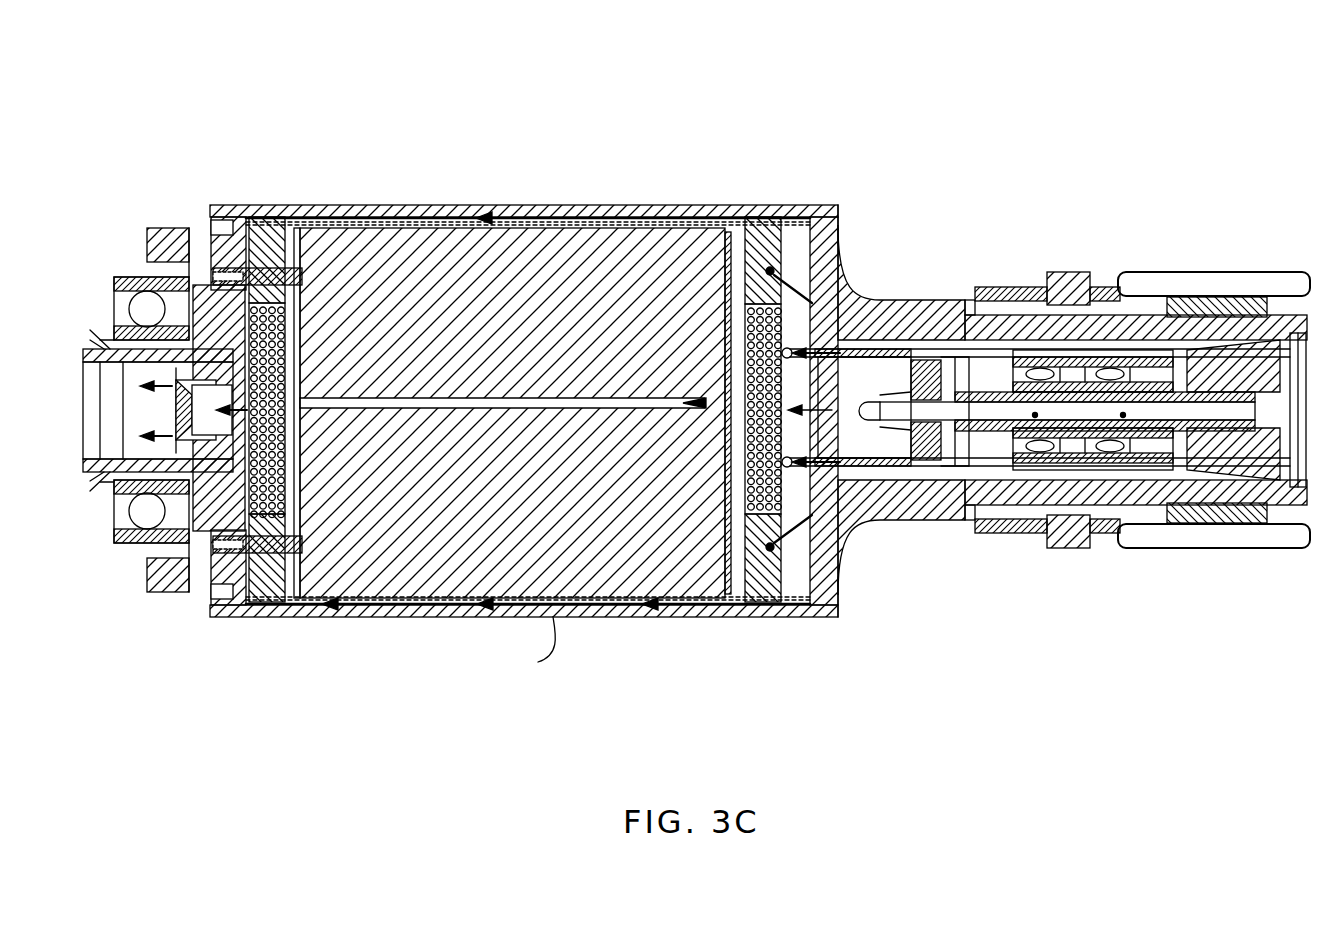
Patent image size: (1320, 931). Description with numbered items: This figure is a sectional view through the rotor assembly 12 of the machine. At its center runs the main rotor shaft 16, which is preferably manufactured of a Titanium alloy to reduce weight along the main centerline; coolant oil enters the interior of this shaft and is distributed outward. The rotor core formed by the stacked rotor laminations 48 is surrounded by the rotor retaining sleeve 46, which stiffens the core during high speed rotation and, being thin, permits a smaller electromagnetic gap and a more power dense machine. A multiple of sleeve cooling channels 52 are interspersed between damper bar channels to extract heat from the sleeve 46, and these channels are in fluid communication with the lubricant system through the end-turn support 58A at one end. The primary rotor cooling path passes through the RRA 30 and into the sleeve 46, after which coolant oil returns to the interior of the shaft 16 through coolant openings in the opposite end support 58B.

The rotor assembly 12 is at (1046, 344).
The main rotor shaft 16 is at (885, 310).
The RRA 30 is at (1032, 433).
The rotor retaining sleeve 46 is at (478, 205).
The rotor laminations 48 is at (511, 324).
The sleeve cooling channels 52 is at (634, 205).
The end-turn support 58A is at (760, 590).
The end support 58B is at (273, 600).